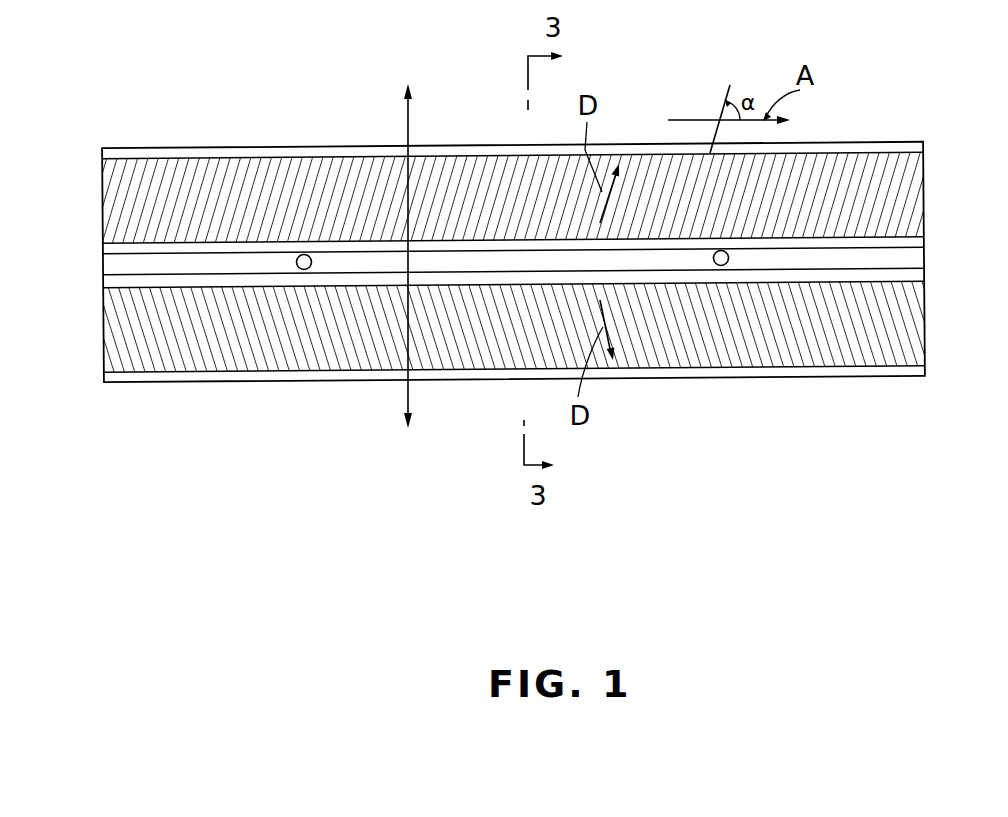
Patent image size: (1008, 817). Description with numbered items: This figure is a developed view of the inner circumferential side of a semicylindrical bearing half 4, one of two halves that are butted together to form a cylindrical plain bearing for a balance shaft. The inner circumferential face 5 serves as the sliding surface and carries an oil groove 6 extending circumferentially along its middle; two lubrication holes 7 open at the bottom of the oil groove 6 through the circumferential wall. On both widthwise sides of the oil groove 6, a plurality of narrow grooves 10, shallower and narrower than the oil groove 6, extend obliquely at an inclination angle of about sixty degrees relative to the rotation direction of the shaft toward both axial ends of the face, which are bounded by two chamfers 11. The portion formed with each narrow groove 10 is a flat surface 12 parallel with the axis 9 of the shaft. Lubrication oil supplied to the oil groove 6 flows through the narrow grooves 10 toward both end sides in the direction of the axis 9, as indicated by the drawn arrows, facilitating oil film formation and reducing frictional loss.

The bearing half 4 is at (265, 147).
The inner circumferential face 5 is at (300, 165).
The oil groove 6 is at (115, 262).
The lubrication hole 7 is at (297, 266).
The axis 9 is at (405, 393).
The narrow groove 10 is at (490, 168).
The chamfer 11 is at (446, 150).
The flat surface 12 is at (858, 160).